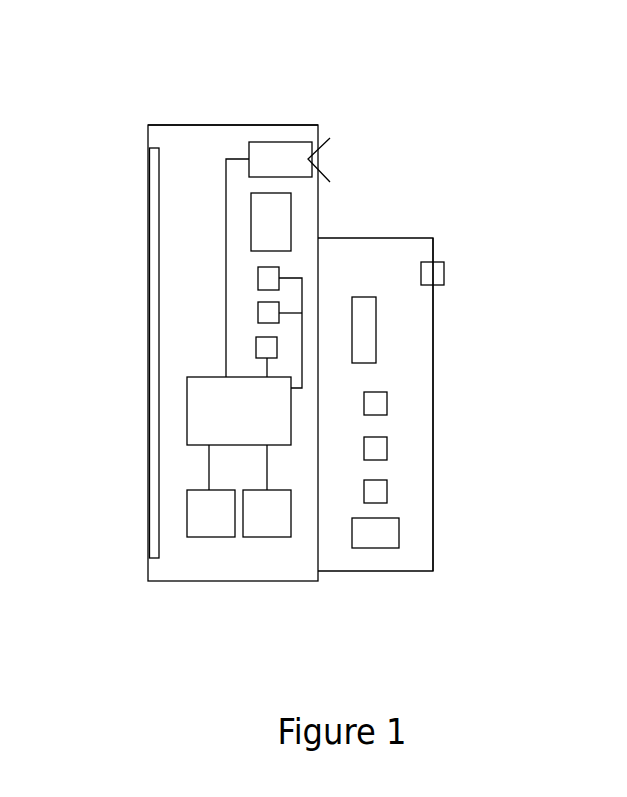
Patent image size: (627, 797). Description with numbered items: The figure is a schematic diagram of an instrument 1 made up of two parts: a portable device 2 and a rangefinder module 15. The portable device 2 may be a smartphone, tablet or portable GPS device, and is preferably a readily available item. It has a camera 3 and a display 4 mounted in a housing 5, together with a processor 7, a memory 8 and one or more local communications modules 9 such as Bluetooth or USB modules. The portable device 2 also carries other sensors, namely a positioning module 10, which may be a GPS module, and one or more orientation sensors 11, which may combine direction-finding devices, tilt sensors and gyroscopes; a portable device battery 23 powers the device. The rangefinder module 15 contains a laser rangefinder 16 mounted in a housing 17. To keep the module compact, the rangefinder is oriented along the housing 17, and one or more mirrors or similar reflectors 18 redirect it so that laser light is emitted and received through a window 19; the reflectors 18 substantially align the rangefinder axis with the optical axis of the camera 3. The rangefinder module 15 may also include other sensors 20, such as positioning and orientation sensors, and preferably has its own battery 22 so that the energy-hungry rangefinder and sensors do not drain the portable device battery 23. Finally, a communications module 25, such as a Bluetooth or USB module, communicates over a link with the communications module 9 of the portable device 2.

The instrument 1 is at (505, 93).
The portable device 2 is at (165, 581).
The camera 3 is at (368, 156).
The display 4 is at (147, 432).
The housing 5 is at (182, 125).
The processor 7 is at (291, 410).
The memory 8 is at (207, 537).
The local communications module 9 is at (265, 537).
The positioning module 10 is at (256, 347).
The orientation sensors 11 is at (258, 278).
The rangefinder module 15 is at (397, 571).
The laser rangefinder 16 is at (376, 328).
The housing 17 is at (433, 348).
The reflectors 18 is at (329, 285).
The window 19 is at (445, 272).
The other sensors 20 is at (387, 398).
The battery 22 is at (399, 535).
The portable device battery 23 is at (291, 212).
The communications module 25 is at (387, 492).